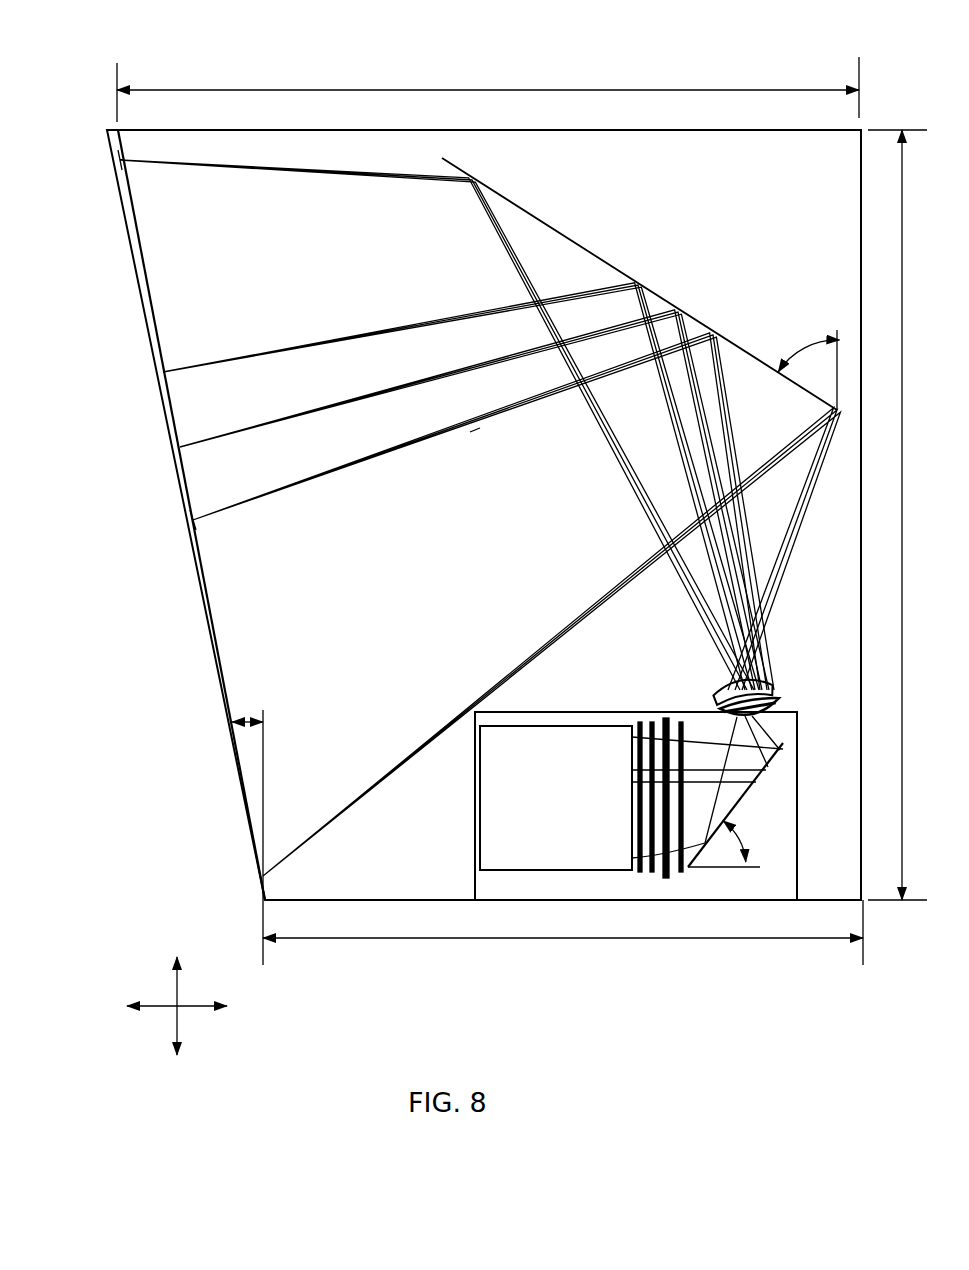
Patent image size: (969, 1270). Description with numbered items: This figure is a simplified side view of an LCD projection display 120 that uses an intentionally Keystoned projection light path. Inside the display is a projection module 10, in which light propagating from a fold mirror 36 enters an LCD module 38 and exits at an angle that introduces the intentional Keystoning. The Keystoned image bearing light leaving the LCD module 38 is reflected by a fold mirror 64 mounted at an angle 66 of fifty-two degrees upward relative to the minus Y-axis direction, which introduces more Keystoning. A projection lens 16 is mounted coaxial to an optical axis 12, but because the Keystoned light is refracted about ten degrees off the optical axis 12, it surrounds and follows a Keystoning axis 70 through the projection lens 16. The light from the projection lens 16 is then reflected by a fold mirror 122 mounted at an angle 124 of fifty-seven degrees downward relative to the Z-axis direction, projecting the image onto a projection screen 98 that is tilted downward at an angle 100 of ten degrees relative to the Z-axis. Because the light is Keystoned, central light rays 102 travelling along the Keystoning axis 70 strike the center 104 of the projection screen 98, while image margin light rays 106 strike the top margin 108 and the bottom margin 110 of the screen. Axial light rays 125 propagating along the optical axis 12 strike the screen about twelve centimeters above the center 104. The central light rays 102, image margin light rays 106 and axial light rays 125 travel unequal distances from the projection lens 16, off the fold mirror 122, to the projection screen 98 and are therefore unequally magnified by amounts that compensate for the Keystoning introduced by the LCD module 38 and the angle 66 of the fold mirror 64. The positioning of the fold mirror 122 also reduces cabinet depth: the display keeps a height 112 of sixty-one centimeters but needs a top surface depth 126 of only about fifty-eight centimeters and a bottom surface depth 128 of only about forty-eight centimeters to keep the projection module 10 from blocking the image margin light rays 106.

The projection module 10 is at (565, 712).
The optical axis 12 is at (343, 345).
The projection lens 16 is at (774, 680).
The fold mirror 36 is at (552, 838).
The LCD module 38 is at (696, 706).
The fold mirror 64 is at (748, 818).
The angle 66 is at (748, 842).
The Keystoning axis 70 is at (416, 444).
The projection screen 98 is at (240, 804).
The angle 100 is at (248, 712).
The central light rays 102 is at (481, 433).
The center 104 is at (184, 523).
The image margin light rays 106 is at (318, 182).
The top margin 108 is at (114, 163).
The bottom margin 110 is at (270, 878).
The height 112 is at (902, 262).
The LCD projection display 120 is at (175, 892).
The fold mirror 122 is at (583, 250).
The angle 124 is at (788, 358).
The axial light rays 125 is at (408, 320).
The top surface depth 126 is at (430, 88).
The bottom surface depth 128 is at (597, 940).